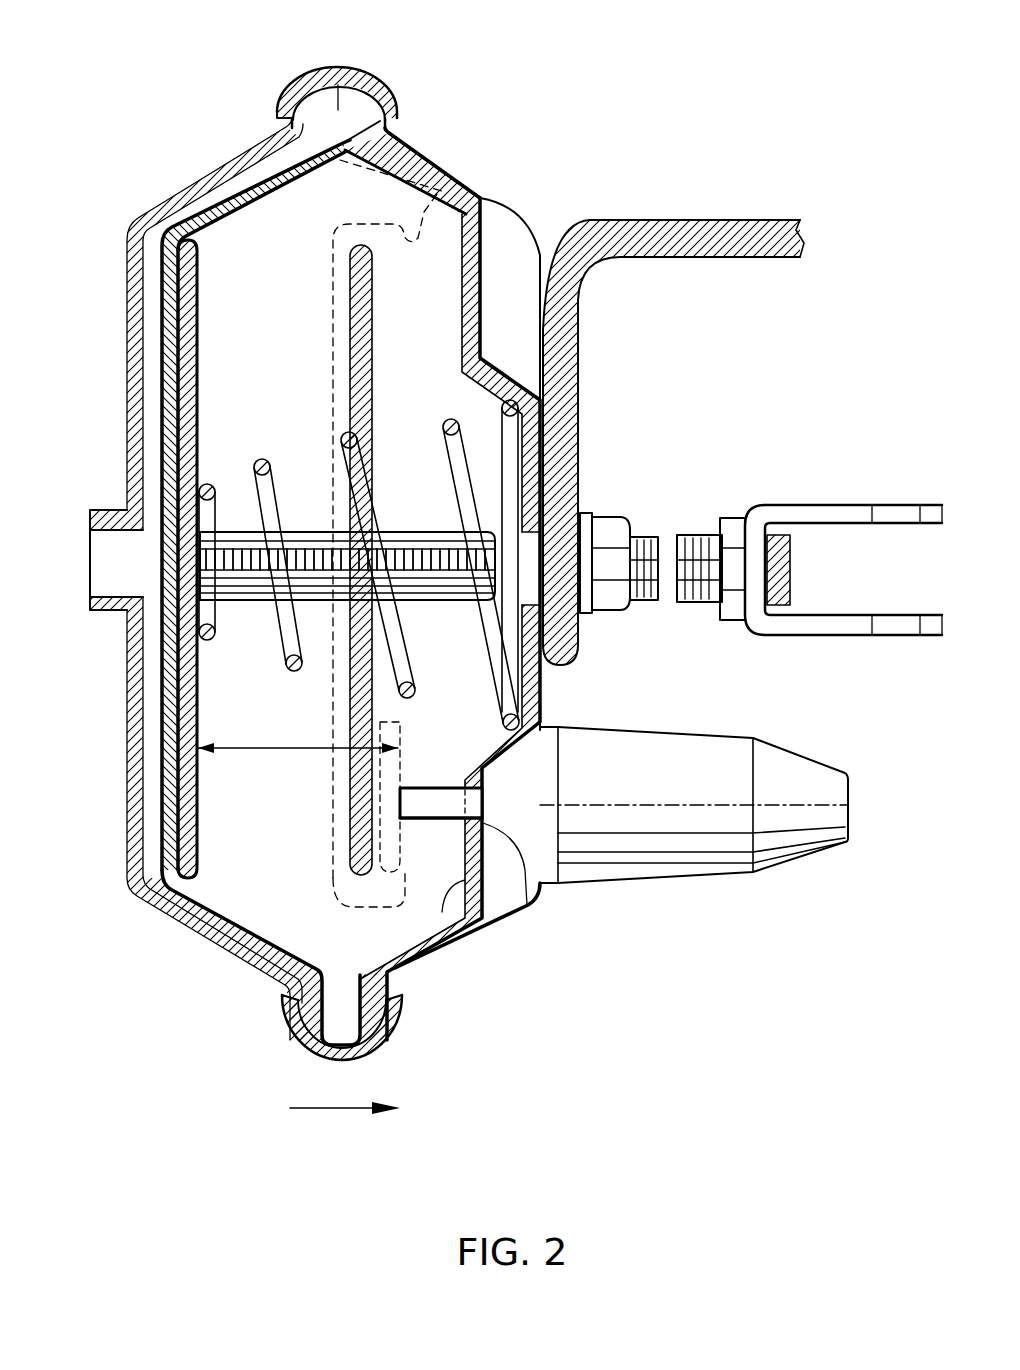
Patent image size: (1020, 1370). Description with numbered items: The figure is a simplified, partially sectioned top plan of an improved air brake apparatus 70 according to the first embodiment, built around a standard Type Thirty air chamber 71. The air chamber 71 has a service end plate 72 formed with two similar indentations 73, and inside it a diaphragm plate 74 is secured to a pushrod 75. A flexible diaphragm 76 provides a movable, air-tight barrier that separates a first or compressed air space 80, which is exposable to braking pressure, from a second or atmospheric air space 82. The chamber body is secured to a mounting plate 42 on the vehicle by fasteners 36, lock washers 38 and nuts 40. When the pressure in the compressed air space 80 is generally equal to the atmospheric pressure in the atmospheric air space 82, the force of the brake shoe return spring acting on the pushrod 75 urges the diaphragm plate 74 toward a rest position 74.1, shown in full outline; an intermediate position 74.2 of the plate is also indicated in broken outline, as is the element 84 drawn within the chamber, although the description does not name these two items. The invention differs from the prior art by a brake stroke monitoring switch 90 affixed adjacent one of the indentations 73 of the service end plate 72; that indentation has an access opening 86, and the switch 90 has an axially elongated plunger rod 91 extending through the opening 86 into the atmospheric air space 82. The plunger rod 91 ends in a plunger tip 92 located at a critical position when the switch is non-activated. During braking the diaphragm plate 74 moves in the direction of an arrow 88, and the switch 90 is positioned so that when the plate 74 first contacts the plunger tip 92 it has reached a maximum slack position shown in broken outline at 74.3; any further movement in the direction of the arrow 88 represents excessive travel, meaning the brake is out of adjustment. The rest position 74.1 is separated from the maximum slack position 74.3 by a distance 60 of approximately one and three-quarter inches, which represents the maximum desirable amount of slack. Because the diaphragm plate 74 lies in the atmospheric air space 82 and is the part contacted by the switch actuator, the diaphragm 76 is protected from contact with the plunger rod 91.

The fastener 36 is at (645, 537).
The lock washer 38 is at (586, 513).
The nut 40 is at (610, 518).
The mounting plate 42 is at (718, 258).
The distance 60 is at (290, 750).
The air brake apparatus 70 is at (770, 88).
The air chamber 71 is at (416, 157).
The service end plate 72 is at (440, 183).
The indentations 73 is at (462, 333).
The diaphragm plate 74 is at (198, 276).
The rest position 74.1 is at (198, 315).
The liner partition 74.2 is at (373, 298).
The maximum slack position 74.3 is at (405, 724).
The pushrod 75 is at (700, 532).
The flexible diaphragm 76 is at (160, 350).
The compressed air space 80 is at (152, 226).
The atmospheric air space 82 is at (429, 240).
The bolt with rods 84 is at (443, 445).
The access opening 86 is at (525, 905).
The arrow 88 is at (332, 1108).
The brake stroke monitoring switch 90 is at (800, 720).
The plunger rod 91 is at (435, 818).
The plunger tip 92 is at (405, 790).